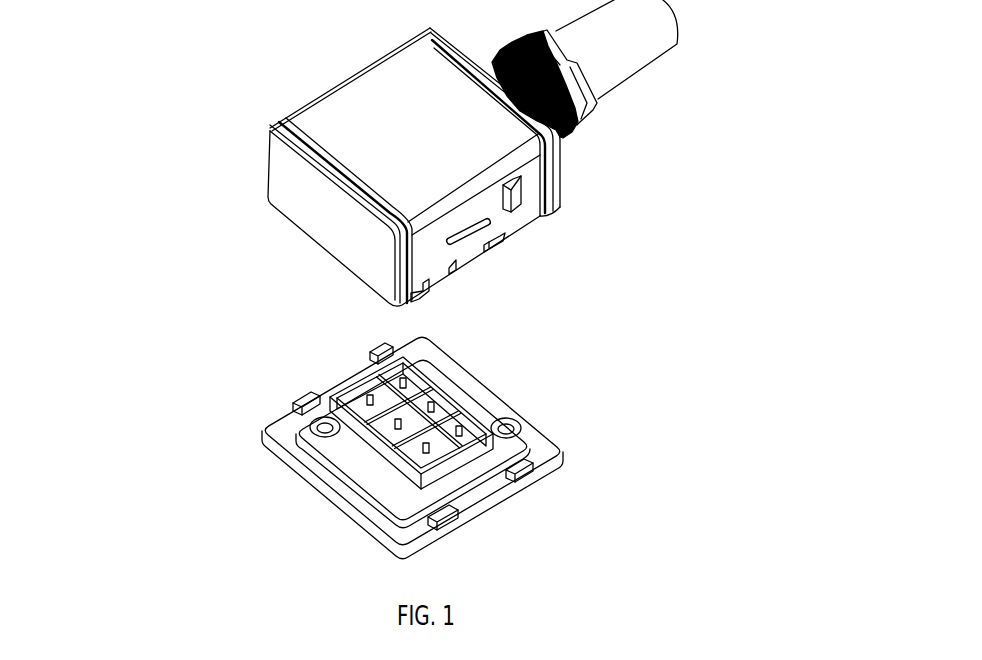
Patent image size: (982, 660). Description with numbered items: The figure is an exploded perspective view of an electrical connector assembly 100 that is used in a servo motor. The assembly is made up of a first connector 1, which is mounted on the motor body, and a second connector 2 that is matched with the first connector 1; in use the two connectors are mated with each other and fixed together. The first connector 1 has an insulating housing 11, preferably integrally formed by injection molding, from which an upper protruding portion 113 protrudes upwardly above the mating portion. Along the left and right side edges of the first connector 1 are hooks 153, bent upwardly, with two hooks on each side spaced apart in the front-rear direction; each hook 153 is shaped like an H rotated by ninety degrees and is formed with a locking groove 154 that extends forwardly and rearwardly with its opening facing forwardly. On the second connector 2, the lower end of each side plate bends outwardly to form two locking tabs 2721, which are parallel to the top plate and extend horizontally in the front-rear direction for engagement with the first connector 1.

The electrical connector assembly 100 is at (150, 40).
The second connector 2 is at (245, 168).
The locking tab 2721 is at (503, 247).
The first connector 1 is at (257, 413).
The insulating housing 11 is at (550, 448).
The upper protruding portion 113 is at (445, 392).
The hook 153 is at (530, 470).
The locking groove 154 is at (507, 487).